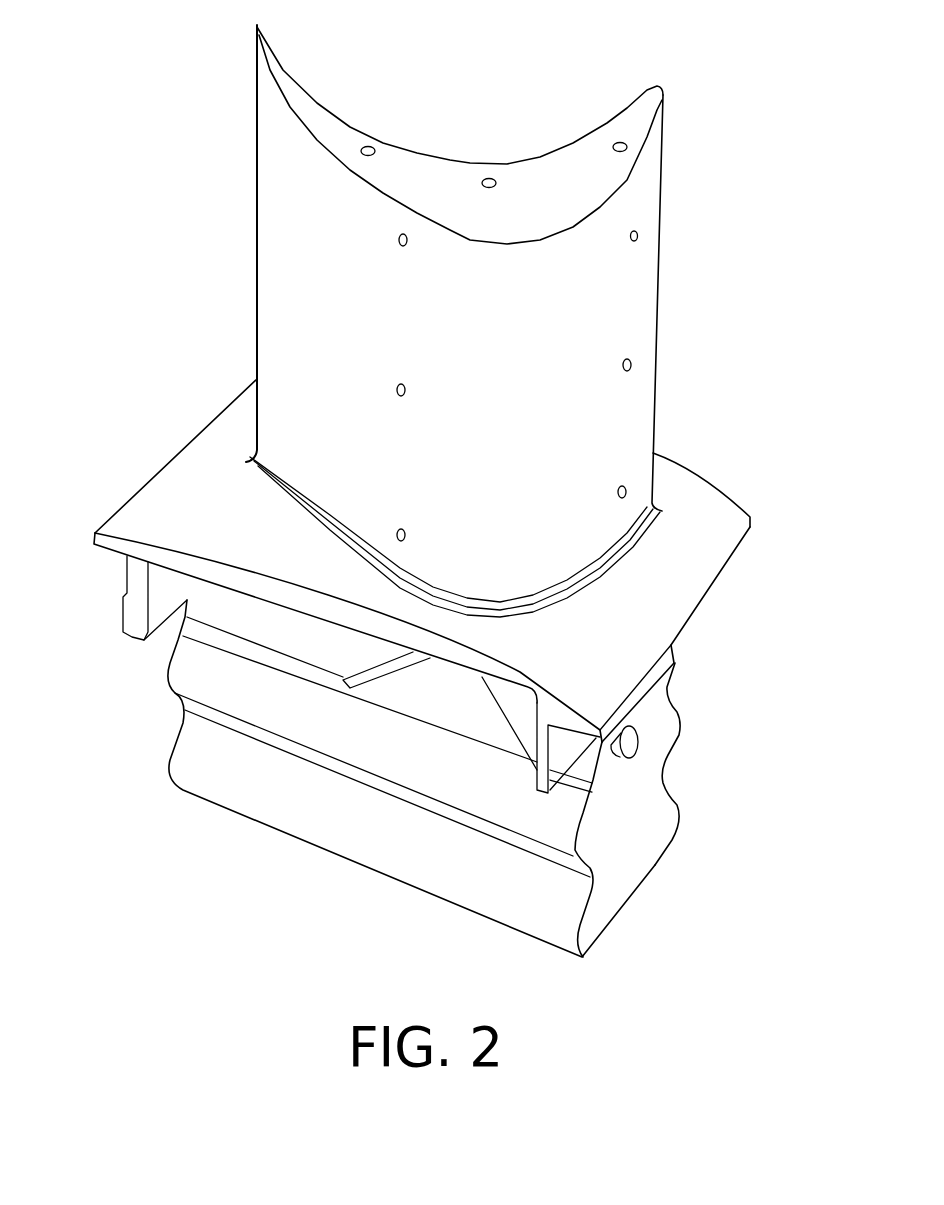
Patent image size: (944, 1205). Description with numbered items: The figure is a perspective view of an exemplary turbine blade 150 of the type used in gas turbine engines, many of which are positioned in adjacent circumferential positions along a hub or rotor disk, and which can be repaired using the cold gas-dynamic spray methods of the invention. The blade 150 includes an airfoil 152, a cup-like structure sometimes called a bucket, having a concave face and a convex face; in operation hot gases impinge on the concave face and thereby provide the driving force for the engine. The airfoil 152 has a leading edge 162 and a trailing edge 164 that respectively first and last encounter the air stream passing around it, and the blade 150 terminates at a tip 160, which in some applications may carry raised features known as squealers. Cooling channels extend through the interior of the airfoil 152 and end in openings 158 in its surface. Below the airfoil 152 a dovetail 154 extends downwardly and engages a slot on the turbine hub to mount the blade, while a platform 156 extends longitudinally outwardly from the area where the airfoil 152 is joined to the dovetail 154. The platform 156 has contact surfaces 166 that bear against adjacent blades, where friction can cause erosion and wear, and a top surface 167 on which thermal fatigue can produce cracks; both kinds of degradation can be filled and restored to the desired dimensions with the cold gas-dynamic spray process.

The turbine blade 150 is at (243, 900).
The airfoil 152 is at (267, 97).
The dovetail 154 is at (167, 770).
The platform 156 is at (157, 492).
The openings 158 is at (620, 143).
The tip 160 is at (460, 163).
The leading edge 162 is at (666, 90).
The trailing edge 164 is at (267, 207).
The contact surfaces 166 is at (135, 563).
The top surface 167 is at (695, 582).